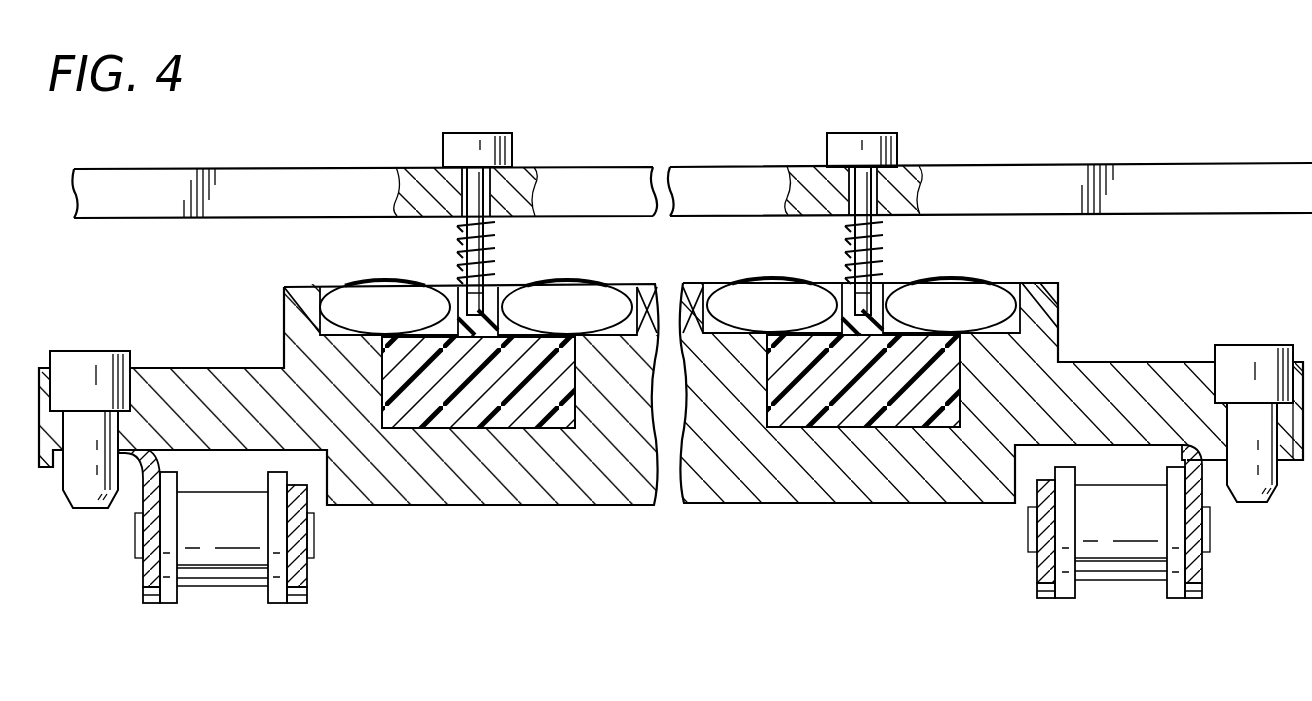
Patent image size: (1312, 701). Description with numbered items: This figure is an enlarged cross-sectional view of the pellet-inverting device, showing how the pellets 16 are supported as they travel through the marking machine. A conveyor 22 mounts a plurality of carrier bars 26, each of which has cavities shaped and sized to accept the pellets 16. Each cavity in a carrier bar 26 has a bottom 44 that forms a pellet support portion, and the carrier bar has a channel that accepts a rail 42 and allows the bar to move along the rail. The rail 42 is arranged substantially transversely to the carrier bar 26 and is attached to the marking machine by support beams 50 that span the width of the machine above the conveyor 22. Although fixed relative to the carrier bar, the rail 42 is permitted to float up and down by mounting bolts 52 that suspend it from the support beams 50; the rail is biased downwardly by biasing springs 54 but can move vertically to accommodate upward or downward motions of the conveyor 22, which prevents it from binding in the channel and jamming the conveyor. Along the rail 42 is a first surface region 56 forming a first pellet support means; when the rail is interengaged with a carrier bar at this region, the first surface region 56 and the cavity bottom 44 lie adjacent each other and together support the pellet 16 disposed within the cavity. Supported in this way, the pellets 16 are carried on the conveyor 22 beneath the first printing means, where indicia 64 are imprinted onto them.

The pellet 16 is at (330, 308).
The carrier bar 26 is at (1108, 365).
The conveyor 22 is at (167, 563).
The rail 42 is at (446, 418).
The cavity bottom 44 is at (340, 330).
The support beam 50 is at (330, 182).
The mounting bolt 52 is at (498, 153).
The biasing spring 54 is at (492, 236).
The first surface region 56 is at (425, 333).
The indicia 64 is at (375, 281).